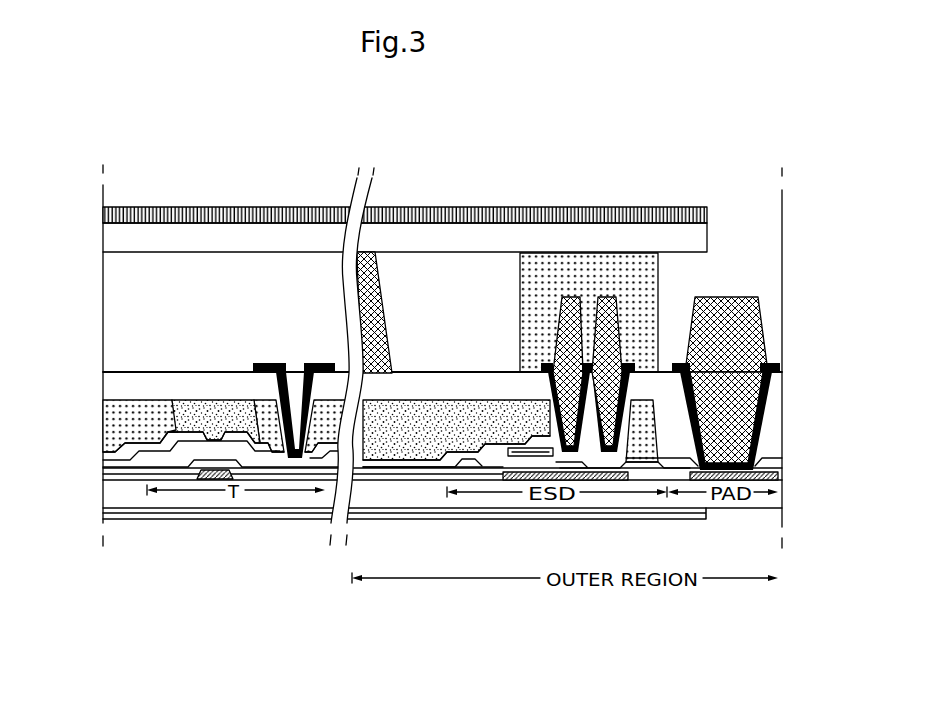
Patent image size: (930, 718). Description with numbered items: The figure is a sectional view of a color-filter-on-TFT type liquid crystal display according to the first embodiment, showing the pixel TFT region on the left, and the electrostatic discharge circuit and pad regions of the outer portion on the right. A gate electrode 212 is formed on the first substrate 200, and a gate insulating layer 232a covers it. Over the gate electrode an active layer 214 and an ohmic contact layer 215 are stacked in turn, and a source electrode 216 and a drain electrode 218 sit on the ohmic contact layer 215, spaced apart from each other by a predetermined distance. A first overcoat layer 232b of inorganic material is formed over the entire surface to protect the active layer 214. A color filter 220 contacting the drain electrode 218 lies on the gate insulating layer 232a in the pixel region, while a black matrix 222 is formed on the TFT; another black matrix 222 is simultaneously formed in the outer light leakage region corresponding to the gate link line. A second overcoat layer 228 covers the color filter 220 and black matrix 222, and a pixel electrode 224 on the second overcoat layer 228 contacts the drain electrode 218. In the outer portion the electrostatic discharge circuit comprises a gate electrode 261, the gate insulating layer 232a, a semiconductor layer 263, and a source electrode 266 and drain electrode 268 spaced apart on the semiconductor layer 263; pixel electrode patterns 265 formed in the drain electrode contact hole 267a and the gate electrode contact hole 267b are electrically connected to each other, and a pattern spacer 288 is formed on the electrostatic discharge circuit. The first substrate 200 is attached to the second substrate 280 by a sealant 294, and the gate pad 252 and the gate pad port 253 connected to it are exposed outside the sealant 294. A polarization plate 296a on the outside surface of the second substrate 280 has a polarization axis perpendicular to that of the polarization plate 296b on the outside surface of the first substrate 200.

The first substrate 200 is at (775, 505).
The gate electrode 212 is at (216, 478).
The active layer 214 is at (257, 467).
The ohmic contact layer 215 is at (275, 452).
The source electrode 216 is at (176, 400).
The drain electrode 218 is at (235, 440).
The color filter 220 is at (102, 435).
The black matrix 222 is at (155, 404).
The pixel electrode 224 is at (268, 362).
The second overcoat layer 228 is at (442, 373).
The gate insulating layer 232a is at (120, 478).
The first overcoat layer 232b is at (100, 463).
The gate pad 252 is at (782, 475).
The gate pad port 253 is at (765, 425).
The gate electrode 261 is at (522, 466).
The semiconductor layer 263 is at (490, 470).
The pixel electrode patterns 265 is at (688, 328).
The source electrode 266 is at (483, 457).
The drain electrode contact hole 267a is at (558, 312).
The gate electrode contact hole 267b is at (612, 297).
The drain electrode 268 is at (582, 462).
The second substrate 280 is at (703, 240).
The pattern spacer 288 is at (383, 295).
The sealant 294 is at (648, 272).
The polarization plate 296a is at (236, 207).
The polarization plate 296b is at (160, 521).